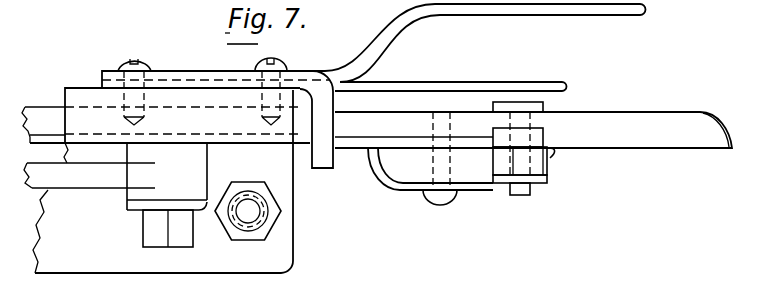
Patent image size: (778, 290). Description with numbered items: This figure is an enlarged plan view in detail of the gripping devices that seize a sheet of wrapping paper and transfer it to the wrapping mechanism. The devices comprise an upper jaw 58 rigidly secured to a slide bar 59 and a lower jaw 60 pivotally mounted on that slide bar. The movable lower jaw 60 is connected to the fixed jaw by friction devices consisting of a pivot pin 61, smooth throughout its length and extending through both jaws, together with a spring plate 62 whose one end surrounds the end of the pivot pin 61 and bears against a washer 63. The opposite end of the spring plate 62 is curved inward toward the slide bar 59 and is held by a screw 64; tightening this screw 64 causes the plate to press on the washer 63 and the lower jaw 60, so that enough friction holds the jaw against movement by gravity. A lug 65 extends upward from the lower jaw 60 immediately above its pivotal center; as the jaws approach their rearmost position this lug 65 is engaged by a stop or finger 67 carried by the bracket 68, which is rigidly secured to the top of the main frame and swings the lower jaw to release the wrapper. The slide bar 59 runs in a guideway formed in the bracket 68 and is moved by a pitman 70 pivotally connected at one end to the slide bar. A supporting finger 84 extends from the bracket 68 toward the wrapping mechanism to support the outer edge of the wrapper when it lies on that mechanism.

The upper jaw 58 is at (638, 128).
The slide bar 59 is at (48, 123).
The lower jaw 60 is at (551, 154).
The pivot pin 61 is at (522, 197).
The spring plate 62 is at (400, 185).
The washer 63 is at (541, 186).
The screw 64 is at (443, 163).
The lug 65 is at (535, 163).
The stop or finger 67 is at (325, 157).
The bracket 68 is at (280, 238).
The pitman 70 is at (67, 175).
The supporting finger 84 is at (490, 10).